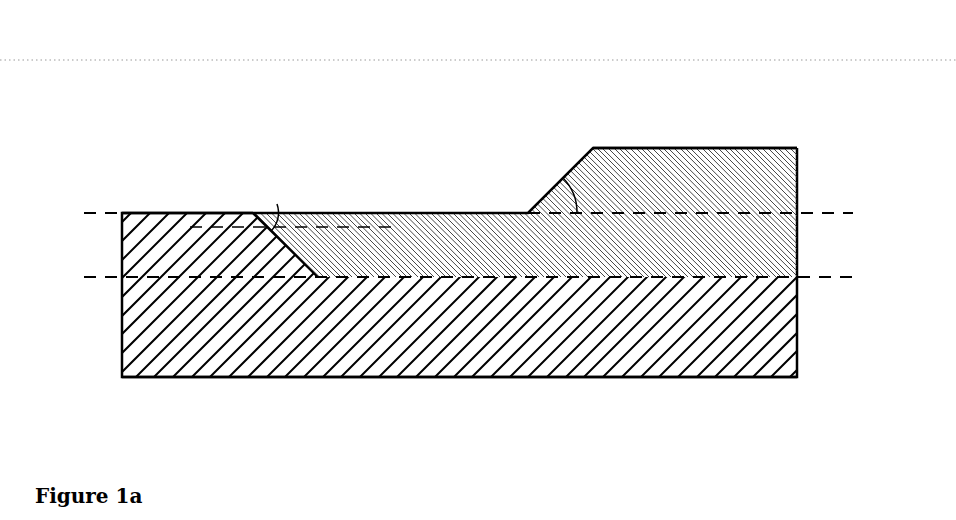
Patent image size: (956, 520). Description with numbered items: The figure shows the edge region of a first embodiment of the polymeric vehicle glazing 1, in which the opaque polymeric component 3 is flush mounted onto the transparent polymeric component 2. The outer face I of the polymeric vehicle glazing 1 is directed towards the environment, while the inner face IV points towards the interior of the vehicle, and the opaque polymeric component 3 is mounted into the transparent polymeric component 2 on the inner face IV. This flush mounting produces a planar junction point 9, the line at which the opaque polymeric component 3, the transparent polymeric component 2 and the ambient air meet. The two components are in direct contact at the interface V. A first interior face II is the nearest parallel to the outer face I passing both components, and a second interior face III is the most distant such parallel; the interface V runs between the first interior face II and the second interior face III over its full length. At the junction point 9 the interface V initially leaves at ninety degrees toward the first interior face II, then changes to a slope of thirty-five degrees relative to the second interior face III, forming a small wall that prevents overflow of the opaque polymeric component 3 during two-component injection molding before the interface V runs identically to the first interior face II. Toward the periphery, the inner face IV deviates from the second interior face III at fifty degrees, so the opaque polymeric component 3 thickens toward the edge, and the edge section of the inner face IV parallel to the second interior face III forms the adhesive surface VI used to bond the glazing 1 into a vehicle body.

The polymeric vehicle glazing 1 is at (388, 80).
The transparent polymeric component 2 is at (582, 345).
The opaque polymeric component 3 is at (471, 237).
The junction point 9 is at (252, 205).
The outer face I is at (316, 386).
The first interior face II is at (453, 279).
The second interior face III is at (452, 216).
The inner face IV is at (140, 204).
The interface V is at (727, 269).
The adhesive surface VI is at (677, 140).